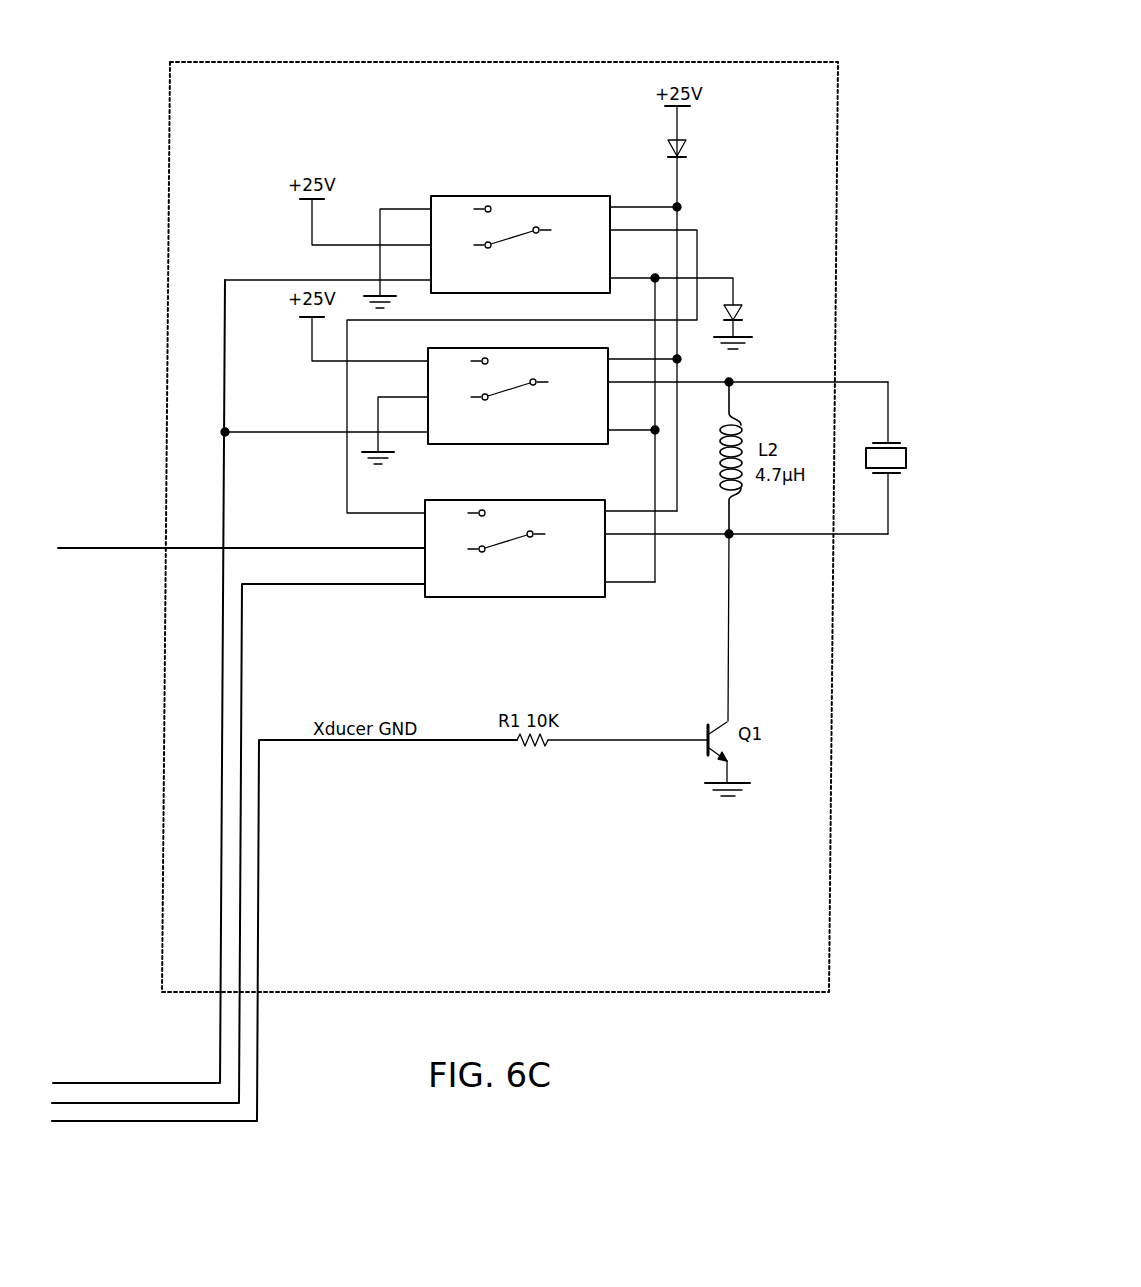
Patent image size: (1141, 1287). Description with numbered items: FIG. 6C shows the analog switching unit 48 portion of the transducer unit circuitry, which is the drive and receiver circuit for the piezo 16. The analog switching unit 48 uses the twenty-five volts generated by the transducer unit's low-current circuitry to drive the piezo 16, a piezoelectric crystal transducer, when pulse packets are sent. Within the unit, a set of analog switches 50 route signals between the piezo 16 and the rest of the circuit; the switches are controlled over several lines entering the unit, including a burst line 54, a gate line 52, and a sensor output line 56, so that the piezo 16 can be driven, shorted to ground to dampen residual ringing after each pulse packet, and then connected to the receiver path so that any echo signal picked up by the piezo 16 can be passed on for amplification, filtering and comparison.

The analog switching unit 48 is at (767, 62).
The analog switch 50 is at (517, 196).
The piezo 16 is at (896, 442).
The sensor output line 56 is at (187, 548).
The burst line 54 is at (219, 733).
The gate line 52 is at (240, 783).